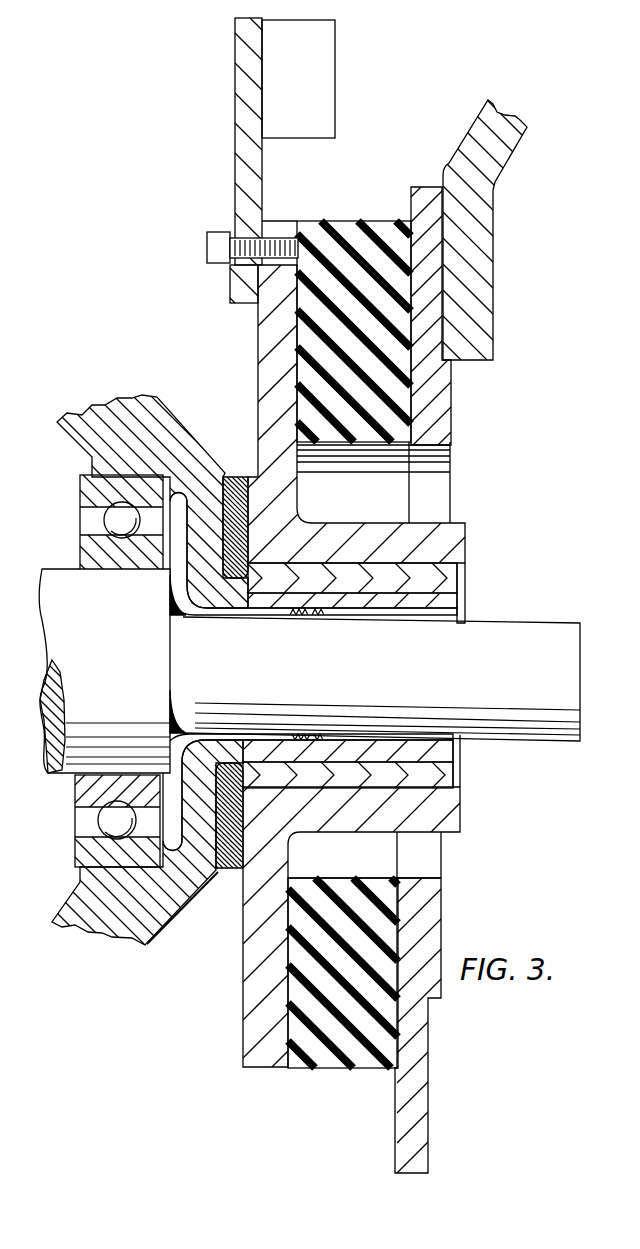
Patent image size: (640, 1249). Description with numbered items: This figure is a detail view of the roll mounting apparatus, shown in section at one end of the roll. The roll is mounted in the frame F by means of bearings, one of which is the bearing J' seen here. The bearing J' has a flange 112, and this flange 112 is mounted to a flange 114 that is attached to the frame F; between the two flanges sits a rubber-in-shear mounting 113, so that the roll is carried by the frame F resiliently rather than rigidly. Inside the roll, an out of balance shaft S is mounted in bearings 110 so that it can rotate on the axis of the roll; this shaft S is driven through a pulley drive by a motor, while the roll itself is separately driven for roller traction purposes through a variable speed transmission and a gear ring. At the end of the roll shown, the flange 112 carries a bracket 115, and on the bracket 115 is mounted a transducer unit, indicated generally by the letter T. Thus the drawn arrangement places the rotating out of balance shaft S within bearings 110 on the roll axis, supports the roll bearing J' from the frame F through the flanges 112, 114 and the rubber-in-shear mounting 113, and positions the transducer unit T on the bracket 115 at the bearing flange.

The bearings 110 is at (133, 480).
The flange 112 is at (275, 281).
The rubber-in-shear mounting 113 is at (338, 255).
The flange 114 is at (427, 200).
The bracket 115 is at (250, 193).
The transducer unit T is at (313, 92).
The frame F is at (487, 262).
The out of balance shaft S is at (122, 657).
The bearing J' is at (335, 666).